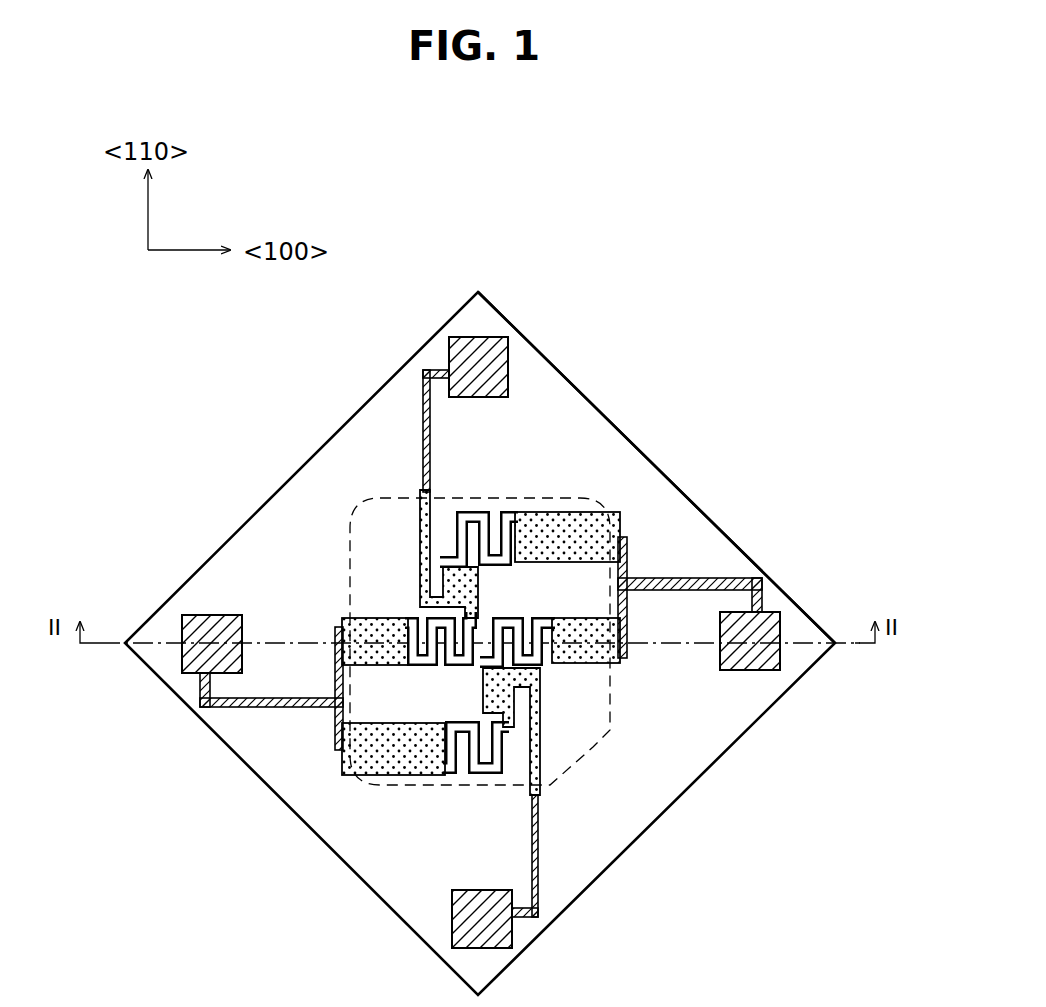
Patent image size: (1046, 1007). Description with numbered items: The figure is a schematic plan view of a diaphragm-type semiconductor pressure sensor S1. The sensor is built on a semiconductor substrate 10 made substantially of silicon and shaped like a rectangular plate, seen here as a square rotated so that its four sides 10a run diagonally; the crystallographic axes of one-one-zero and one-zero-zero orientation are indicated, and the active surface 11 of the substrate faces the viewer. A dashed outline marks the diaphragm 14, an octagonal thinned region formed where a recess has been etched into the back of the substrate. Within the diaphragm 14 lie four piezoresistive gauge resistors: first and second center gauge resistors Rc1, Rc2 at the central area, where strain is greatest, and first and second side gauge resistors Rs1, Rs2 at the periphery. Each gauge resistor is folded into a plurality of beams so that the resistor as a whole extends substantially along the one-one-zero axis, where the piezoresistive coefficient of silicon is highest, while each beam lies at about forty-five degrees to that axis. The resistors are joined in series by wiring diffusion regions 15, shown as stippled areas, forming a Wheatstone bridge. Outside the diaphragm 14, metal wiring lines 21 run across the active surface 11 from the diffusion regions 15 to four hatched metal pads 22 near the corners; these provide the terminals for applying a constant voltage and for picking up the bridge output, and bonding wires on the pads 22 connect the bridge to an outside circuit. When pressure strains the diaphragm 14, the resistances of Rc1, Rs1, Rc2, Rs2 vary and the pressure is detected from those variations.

The semiconductor substrate 10 is at (649, 452).
The sides 10a is at (332, 437).
The active surface 11 is at (650, 496).
The diaphragm 14 is at (593, 747).
The wiring diffusion regions 15 is at (545, 510).
The metal wiring lines 21 is at (422, 462).
The metal pads 22 is at (468, 358).
The first side gauge resistor Rs1 is at (470, 776).
The second side gauge resistor Rs2 is at (466, 508).
The first center gauge resistor Rc1 is at (413, 614).
The second center gauge resistor Rc2 is at (543, 670).
The diaphragm-type semiconductor pressure sensor S1 is at (345, 352).